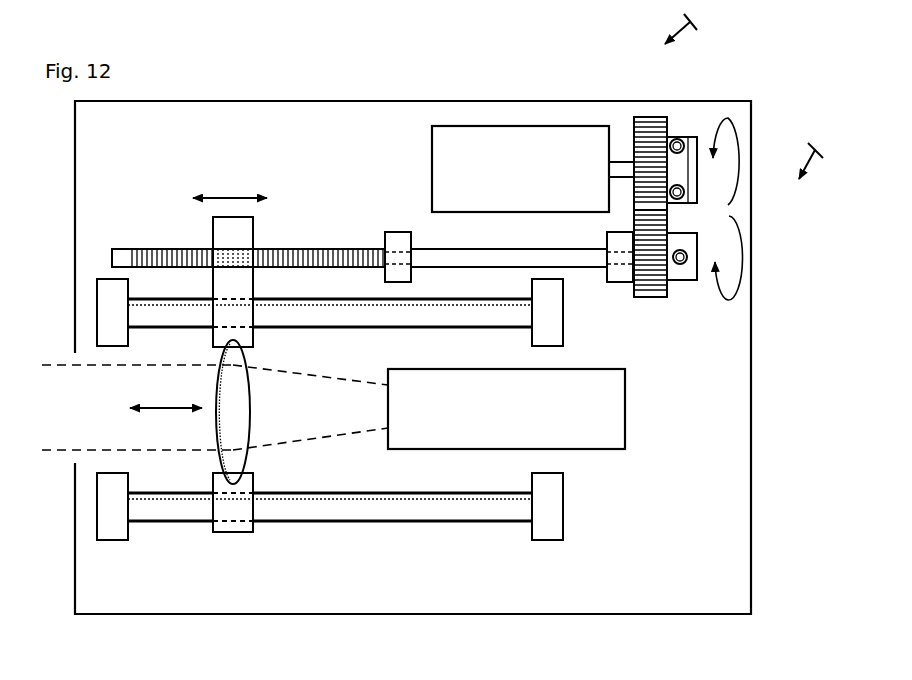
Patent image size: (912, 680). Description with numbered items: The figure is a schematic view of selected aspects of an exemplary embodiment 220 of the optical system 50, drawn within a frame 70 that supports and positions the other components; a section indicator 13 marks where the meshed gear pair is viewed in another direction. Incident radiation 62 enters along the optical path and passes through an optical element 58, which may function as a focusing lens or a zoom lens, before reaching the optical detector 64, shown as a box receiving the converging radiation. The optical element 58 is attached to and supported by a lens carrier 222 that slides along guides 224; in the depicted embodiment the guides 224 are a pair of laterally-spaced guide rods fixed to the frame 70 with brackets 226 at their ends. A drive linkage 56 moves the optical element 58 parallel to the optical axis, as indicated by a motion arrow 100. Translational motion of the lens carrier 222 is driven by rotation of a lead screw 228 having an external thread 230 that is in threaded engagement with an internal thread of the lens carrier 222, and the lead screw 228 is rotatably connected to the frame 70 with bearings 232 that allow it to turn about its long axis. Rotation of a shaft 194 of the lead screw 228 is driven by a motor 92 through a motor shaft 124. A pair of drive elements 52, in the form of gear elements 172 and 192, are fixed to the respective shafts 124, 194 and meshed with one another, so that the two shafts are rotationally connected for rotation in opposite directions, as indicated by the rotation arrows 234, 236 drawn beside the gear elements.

The optical system 50 is at (485, 43).
The exemplary embodiment of optical system 220 is at (484, 74).
The frame 70 is at (566, 100).
The section view indicator 13 is at (729, 108).
The motor 92 is at (432, 145).
The motor shaft 124 is at (621, 160).
The drive elements 52 is at (690, 82).
The gear element 172 is at (679, 109).
The gear element 192 is at (680, 299).
The rotation arrow 234 is at (739, 188).
The rotation arrow 236 is at (737, 292).
The bearings 232 is at (398, 231).
The shaft of lead screw 194 is at (534, 248).
The lead screw 228 is at (148, 243).
The external thread 230 is at (308, 248).
The lens carrier 222 is at (254, 232).
The drive linkage 56 is at (581, 285).
The guides 224 is at (347, 328).
The brackets 226 is at (110, 541).
The optical element 58 is at (241, 478).
The incident radiation 62 is at (110, 449).
The motion arrow 100 is at (170, 405).
The optical detector 64 is at (625, 408).